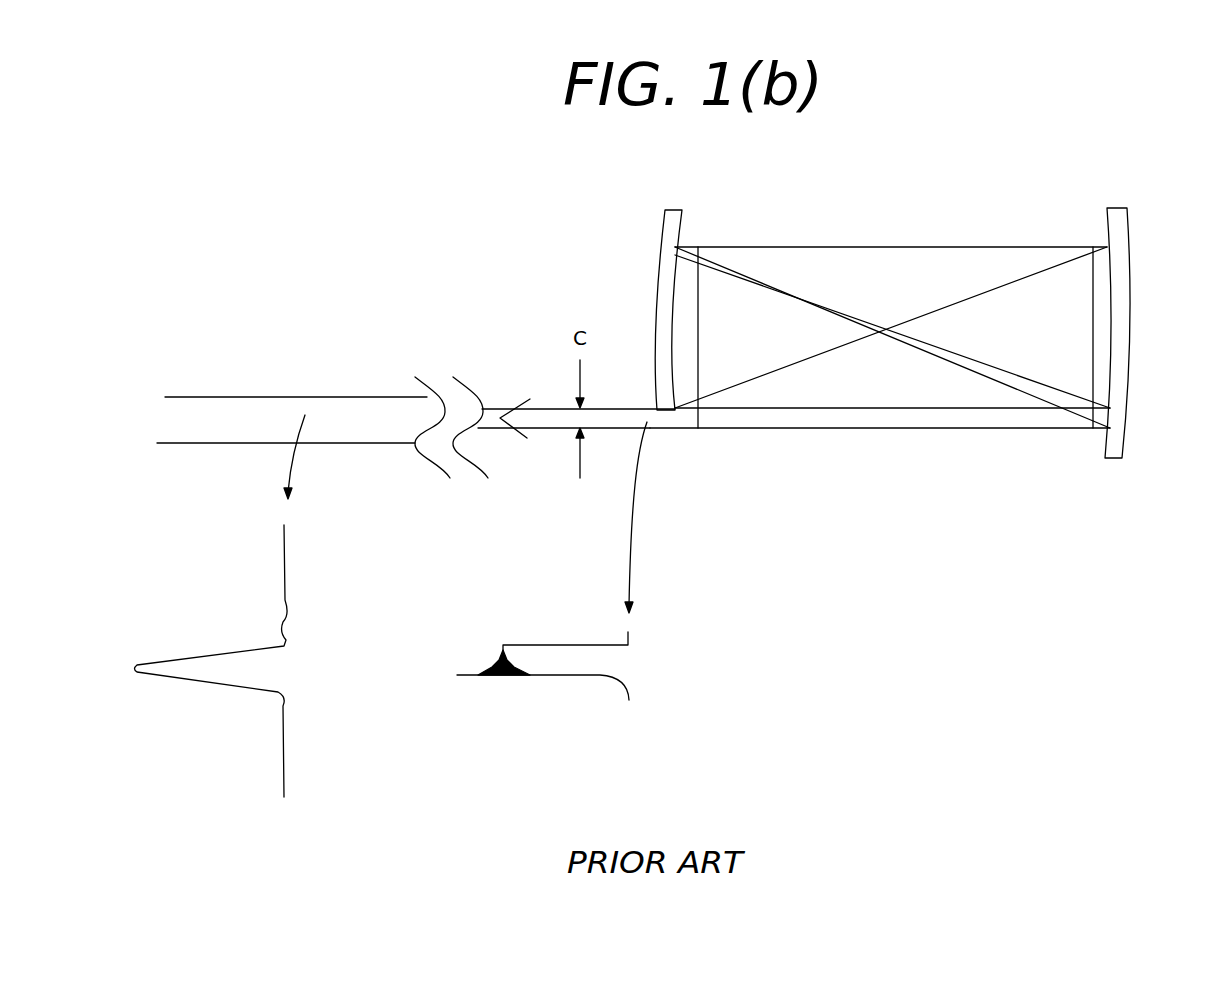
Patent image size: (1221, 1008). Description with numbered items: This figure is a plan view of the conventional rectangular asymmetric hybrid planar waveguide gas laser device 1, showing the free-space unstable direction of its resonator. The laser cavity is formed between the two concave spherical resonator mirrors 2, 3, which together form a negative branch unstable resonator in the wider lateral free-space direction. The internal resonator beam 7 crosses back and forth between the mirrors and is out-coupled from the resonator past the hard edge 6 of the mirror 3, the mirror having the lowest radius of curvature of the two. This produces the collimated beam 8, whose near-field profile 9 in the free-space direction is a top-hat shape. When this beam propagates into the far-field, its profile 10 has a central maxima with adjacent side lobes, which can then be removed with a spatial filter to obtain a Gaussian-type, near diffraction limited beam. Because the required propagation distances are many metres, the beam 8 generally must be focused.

The rectangular asymmetric hybrid planar waveguide gas laser device 1 is at (932, 232).
The resonator mirror 2 is at (1117, 448).
The resonator mirror 3 is at (665, 269).
The hard edge 6 is at (668, 408).
The internal resonator beam 7 is at (903, 338).
The beam 8 is at (544, 414).
The profile 9 is at (613, 677).
The profile 10 is at (258, 685).